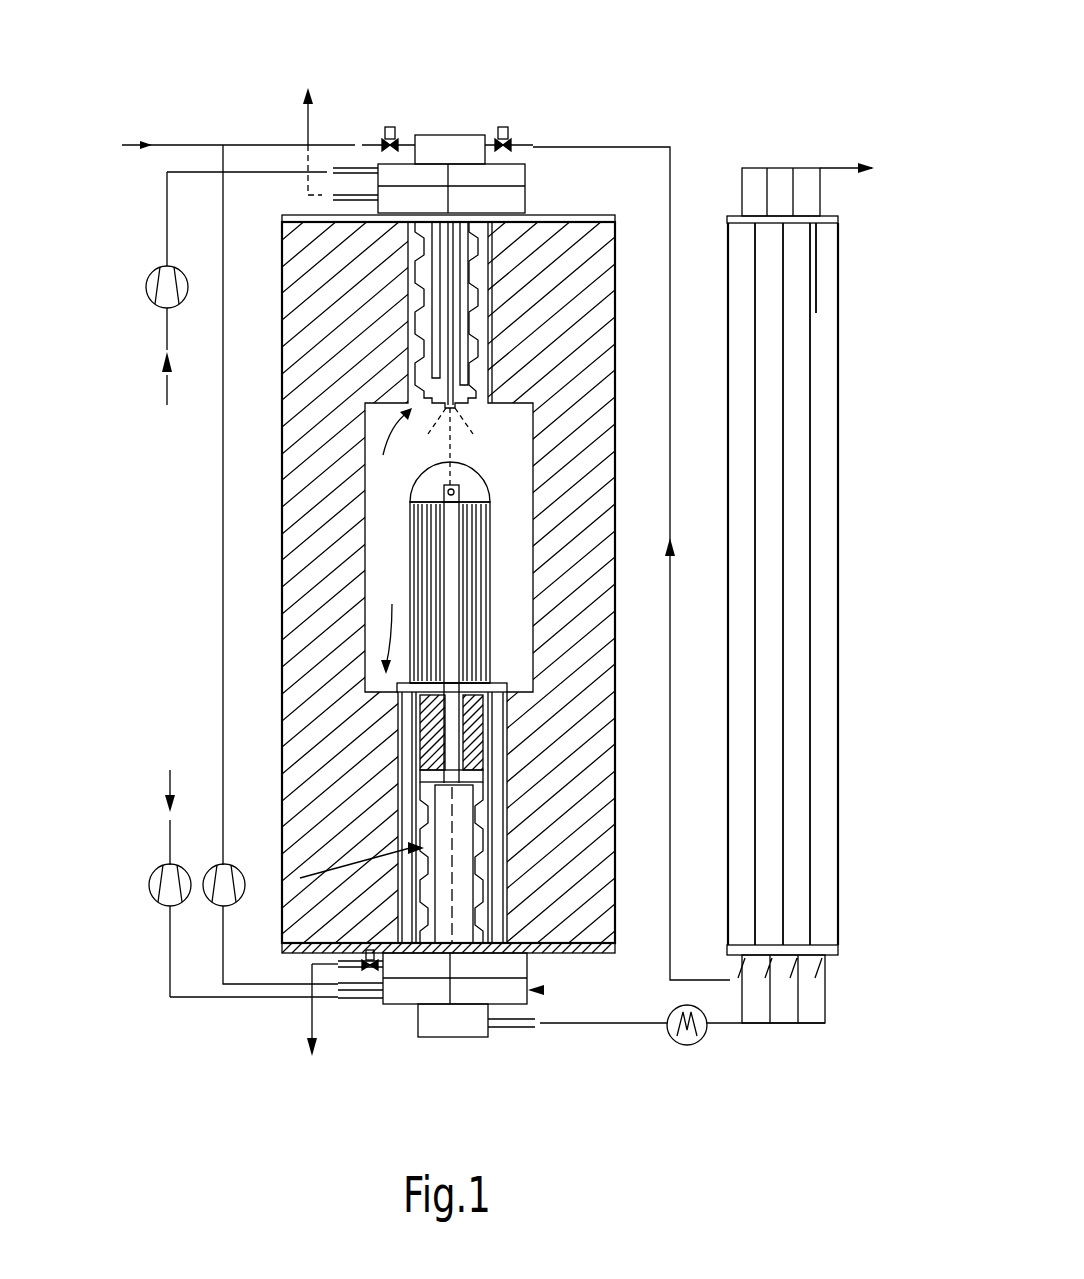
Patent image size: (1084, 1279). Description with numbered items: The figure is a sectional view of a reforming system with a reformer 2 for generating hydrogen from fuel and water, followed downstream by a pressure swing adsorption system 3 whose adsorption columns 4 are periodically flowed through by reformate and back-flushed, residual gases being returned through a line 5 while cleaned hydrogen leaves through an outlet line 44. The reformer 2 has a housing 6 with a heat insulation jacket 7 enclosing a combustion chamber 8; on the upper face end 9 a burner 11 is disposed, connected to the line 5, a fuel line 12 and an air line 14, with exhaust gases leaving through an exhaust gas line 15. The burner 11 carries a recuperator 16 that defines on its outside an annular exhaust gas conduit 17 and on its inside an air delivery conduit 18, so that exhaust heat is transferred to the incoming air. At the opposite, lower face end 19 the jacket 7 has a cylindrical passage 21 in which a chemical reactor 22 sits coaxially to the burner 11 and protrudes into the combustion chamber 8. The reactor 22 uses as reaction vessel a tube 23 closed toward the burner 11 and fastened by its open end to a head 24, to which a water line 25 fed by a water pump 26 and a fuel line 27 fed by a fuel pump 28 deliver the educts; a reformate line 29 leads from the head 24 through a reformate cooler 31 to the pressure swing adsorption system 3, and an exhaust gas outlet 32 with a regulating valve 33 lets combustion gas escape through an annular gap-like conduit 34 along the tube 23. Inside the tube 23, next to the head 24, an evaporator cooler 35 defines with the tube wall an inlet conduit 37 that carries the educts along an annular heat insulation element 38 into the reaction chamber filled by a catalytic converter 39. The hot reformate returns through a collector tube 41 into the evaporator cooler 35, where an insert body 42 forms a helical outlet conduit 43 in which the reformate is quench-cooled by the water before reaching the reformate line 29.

The reformer 2 is at (256, 126).
The pressure swing adsorption system 3 is at (882, 323).
The adsorption columns 4 is at (820, 600).
The line 5 is at (672, 450).
The housing 6 is at (617, 340).
The heat insulation jacket 7 is at (596, 378).
The combustion chamber 8 is at (521, 468).
The face end 9 is at (392, 442).
The burner 11 is at (483, 120).
The fuel line 12 is at (338, 142).
The line 14 is at (167, 232).
The exhaust gas line 15 is at (335, 193).
The recuperator 16 is at (486, 300).
The annular exhaust gas conduit 17 is at (480, 345).
The air delivery conduit 18 is at (452, 412).
The face end 19 is at (387, 624).
The cylindrical passage 21 is at (545, 745).
The chemical reactor 22 is at (505, 590).
The tube 23 is at (490, 662).
The head 24 is at (545, 990).
The line 25 is at (329, 1029).
The water pump 26 is at (152, 898).
The line 27 is at (275, 998).
The fuel pump 28 is at (228, 864).
The reformate line 29 is at (510, 1037).
The reformate cooler 31 is at (677, 1040).
The exhaust gas 32 is at (312, 964).
The regulating valve 33 is at (350, 1002).
The annular gap-like conduit 34 is at (500, 800).
The evaporator cooler 35 is at (300, 878).
The inlet conduit 37 is at (485, 890).
The annular heat insulation element 38 is at (470, 722).
The catalytic converter 39 is at (470, 550).
The collector tube 41 is at (412, 548).
The insert body 42 is at (488, 855).
The outlet conduit 43 is at (488, 905).
The outlet line 44 is at (780, 165).